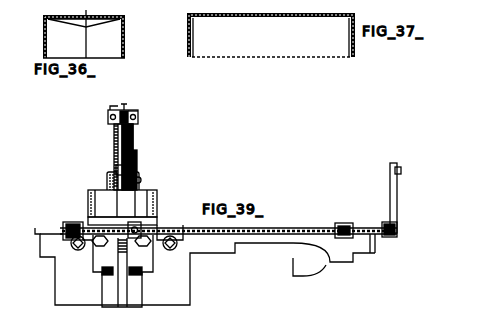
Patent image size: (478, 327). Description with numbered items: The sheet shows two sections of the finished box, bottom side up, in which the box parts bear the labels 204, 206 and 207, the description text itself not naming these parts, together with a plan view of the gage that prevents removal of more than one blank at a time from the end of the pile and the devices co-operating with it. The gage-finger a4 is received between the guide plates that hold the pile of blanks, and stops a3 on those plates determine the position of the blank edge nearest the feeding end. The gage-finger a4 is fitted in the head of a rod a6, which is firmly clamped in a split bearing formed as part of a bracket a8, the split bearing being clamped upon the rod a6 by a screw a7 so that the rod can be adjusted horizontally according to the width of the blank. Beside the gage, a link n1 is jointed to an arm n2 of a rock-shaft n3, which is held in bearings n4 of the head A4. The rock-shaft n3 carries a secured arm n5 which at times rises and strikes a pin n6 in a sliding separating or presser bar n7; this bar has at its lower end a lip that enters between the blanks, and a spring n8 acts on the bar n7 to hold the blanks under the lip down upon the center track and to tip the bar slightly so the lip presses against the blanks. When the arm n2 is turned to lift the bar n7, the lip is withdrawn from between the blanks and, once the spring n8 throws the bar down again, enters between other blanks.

In FIG. 36, the end panel 204 is at (84, 38).
In FIG. 37, the end panel 204 is at (218, 48).
In FIG. 36, the side wall 206 is at (43, 39).
In FIG. 37, the side wall 206 is at (271, 36).
In FIG. 36, the corner seam 207 is at (80, 7).
In FIG. 37, the corner seam 207 is at (189, 57).
In FIG. 39, the stop a3 is at (135, 118).
In FIG. 39, the gage-finger a4 is at (113, 111).
In FIG. 39, the rod a6 is at (114, 138).
In FIG. 39, the screw a7 is at (141, 181).
In FIG. 39, the bracket a8 is at (110, 184).
In FIG. 39, the link n1 is at (397, 163).
In FIG. 39, the arm n2 is at (394, 206).
In FIG. 39, the rock-shaft n3 is at (112, 292).
In FIG. 39, the bearings n4 is at (63, 223).
In FIG. 39, the arm n5 is at (137, 150).
In FIG. 39, the pin n6 is at (131, 112).
In FIG. 39, the separating or presser bar n7 is at (124, 104).
In FIG. 39, the spring n8 is at (105, 202).
In FIG. 39, the head A4 is at (253, 243).